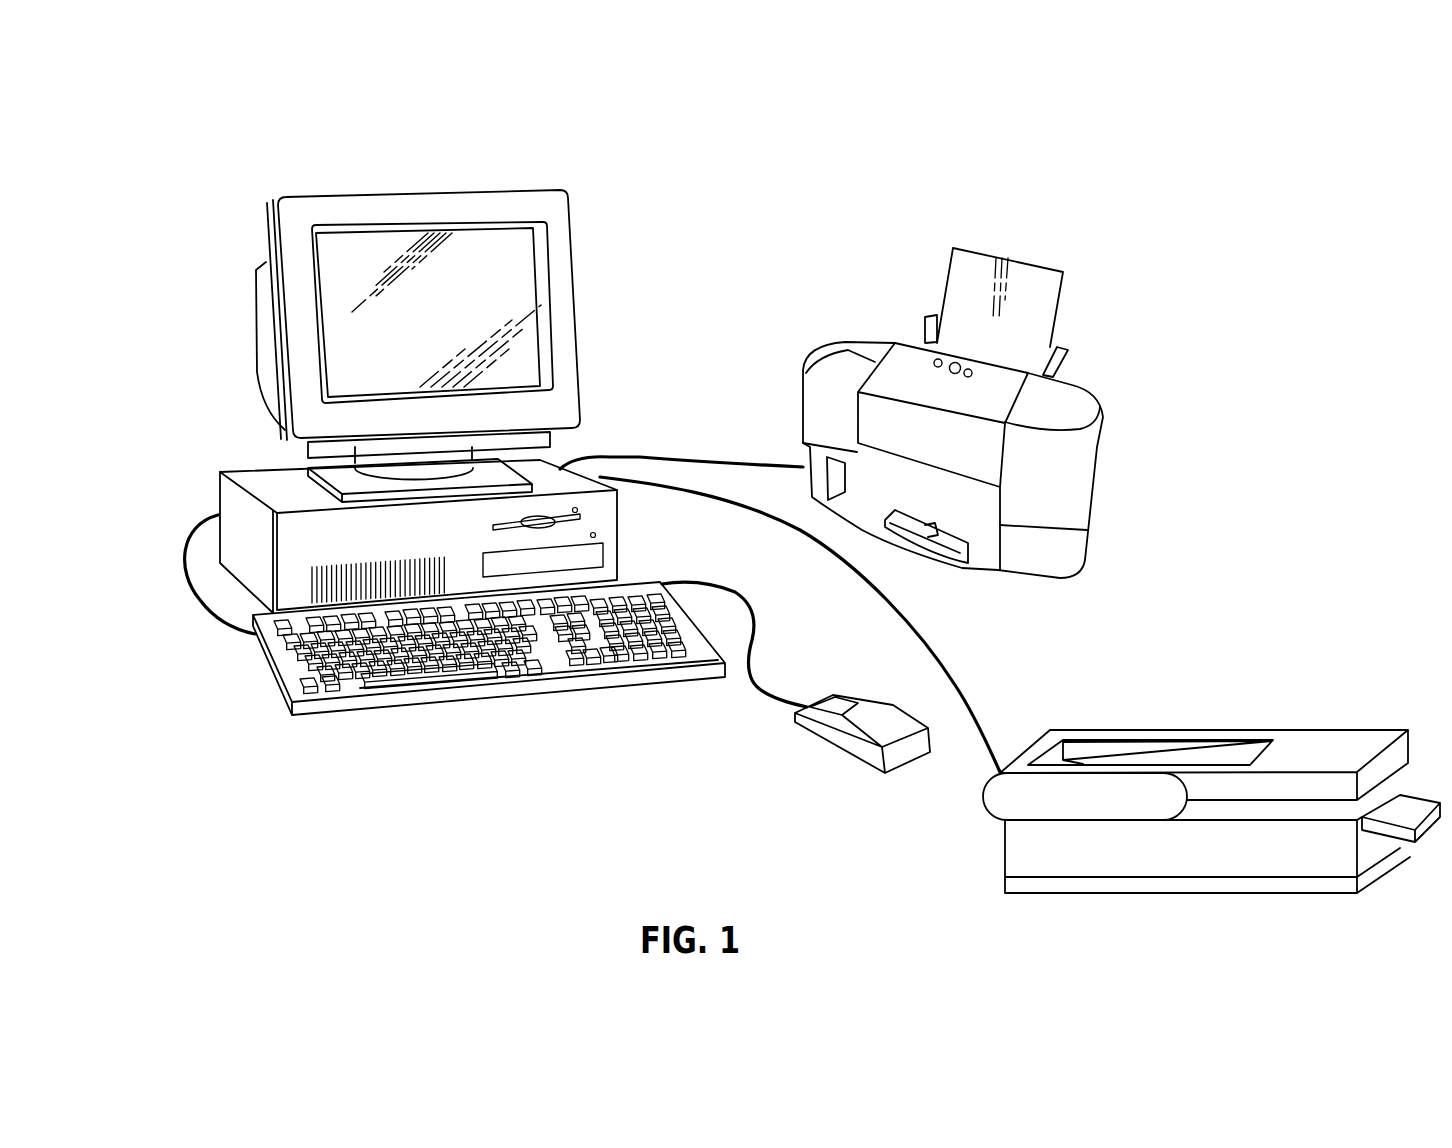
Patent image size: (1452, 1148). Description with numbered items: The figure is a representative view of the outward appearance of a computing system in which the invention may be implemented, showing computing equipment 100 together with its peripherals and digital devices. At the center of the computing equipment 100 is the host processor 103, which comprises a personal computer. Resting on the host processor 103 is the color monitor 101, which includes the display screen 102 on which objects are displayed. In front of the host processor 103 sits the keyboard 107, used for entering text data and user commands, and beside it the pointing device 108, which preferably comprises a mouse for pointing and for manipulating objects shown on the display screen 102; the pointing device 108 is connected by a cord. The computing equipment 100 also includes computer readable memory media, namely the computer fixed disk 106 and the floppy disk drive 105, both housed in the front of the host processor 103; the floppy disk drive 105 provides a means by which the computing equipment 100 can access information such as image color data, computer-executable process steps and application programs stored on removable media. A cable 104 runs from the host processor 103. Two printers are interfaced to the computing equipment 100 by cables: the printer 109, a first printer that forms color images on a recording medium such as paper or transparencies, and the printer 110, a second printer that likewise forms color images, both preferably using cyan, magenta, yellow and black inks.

The computing equipment 100 is at (619, 193).
The color monitor 101 is at (386, 192).
The display screen 102 is at (530, 337).
The host processor 103 is at (233, 465).
The cable 104 is at (218, 515).
The floppy disk drive 105 is at (585, 522).
The computer fixed disk 106 is at (588, 558).
The keyboard 107 is at (368, 688).
The pointing device 108 is at (867, 753).
The printer 109 is at (836, 332).
The printer 110 is at (1365, 714).